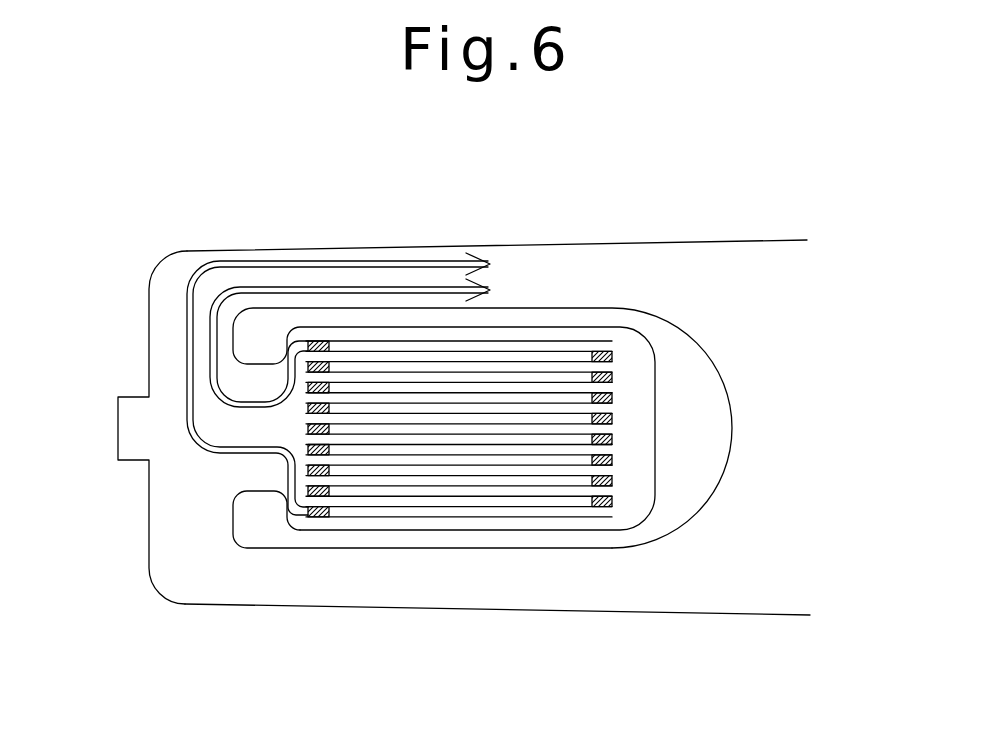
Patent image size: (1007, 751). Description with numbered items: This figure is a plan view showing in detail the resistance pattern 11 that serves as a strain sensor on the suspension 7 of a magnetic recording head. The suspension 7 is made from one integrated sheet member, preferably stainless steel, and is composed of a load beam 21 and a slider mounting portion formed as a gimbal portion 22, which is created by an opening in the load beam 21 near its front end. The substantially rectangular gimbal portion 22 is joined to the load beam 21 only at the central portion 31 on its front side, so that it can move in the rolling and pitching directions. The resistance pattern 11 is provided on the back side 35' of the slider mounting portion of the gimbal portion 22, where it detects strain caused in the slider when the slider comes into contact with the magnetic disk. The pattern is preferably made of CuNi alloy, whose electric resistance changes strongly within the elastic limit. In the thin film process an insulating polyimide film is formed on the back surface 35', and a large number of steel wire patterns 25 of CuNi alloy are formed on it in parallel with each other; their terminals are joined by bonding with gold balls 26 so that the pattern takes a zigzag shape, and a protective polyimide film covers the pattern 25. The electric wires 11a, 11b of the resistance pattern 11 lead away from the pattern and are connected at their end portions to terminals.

The suspension 7 is at (522, 243).
The resistance pattern 11 is at (440, 520).
The electric wire 11a is at (278, 264).
The electric wire 11b is at (377, 288).
The load beam 21 is at (696, 242).
The gimbal portion 22 is at (662, 505).
The steel wire patterns 25 is at (528, 497).
The gold balls 26 is at (312, 517).
The central portion 31 is at (263, 477).
The back side of the slider mounting portion 35' is at (482, 369).